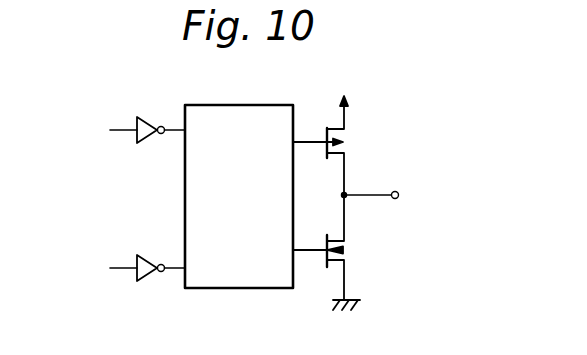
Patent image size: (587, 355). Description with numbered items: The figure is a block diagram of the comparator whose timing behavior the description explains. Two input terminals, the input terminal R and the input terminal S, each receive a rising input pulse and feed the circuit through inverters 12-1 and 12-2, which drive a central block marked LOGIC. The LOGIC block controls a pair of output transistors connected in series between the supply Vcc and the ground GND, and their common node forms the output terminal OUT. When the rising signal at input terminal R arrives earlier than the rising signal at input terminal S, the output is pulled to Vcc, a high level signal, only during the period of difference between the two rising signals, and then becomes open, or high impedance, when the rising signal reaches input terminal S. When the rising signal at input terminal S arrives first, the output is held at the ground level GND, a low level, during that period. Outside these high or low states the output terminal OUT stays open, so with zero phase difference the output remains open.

The inverter 12-1 is at (161, 104).
The inverter 12-2 is at (156, 245).
The logic circuit LOGIC is at (239, 196).
The input terminal R is at (111, 130).
The input terminal S is at (111, 270).
The high level supply Vcc is at (331, 156).
The output terminal OUT is at (398, 199).
The ground terminal GND is at (353, 276).